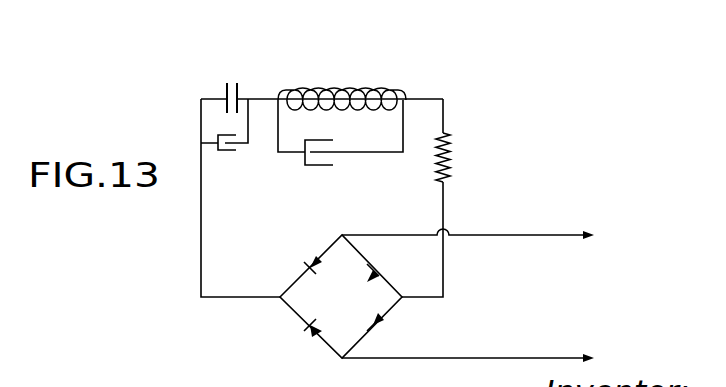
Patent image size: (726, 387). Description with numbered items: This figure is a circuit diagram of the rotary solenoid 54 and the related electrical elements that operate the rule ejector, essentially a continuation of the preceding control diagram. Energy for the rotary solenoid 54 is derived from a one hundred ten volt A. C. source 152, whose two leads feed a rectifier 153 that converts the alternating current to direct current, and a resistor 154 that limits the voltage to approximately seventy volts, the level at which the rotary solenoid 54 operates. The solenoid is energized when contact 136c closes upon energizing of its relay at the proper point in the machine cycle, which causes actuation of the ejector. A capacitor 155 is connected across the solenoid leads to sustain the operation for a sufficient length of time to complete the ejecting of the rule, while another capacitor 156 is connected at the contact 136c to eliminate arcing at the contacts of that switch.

The contact 136c is at (222, 81).
The capacitor 156 is at (230, 153).
The rotary solenoid 54 is at (382, 88).
The capacitor 155 is at (330, 168).
The resistor 154 is at (462, 140).
The rectifier 153 is at (289, 318).
The A. C. source 152 is at (540, 237).